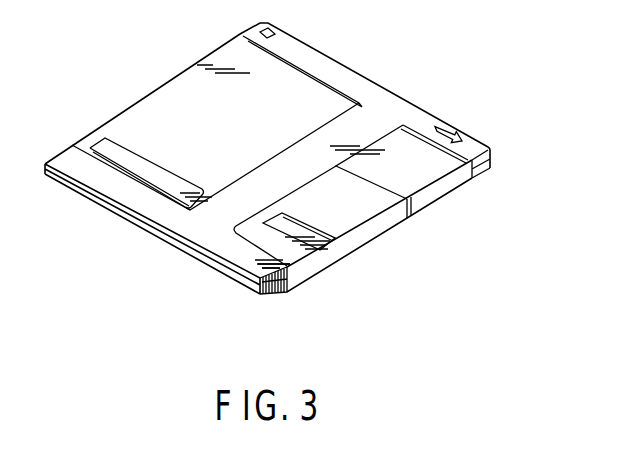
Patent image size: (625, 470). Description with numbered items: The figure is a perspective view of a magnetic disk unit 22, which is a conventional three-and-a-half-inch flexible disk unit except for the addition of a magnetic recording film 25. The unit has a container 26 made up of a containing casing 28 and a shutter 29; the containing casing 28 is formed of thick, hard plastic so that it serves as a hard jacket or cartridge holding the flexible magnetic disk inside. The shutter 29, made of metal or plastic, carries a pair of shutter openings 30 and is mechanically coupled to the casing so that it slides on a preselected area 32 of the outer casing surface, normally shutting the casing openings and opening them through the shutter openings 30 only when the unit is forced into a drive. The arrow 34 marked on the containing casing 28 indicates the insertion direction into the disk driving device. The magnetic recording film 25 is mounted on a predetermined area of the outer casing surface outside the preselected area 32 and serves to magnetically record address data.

The magnetic disk unit 22 is at (392, 86).
The magnetic recording film 25 is at (162, 184).
The container 26 is at (393, 327).
The containing casing 28 is at (270, 276).
The shutter 29 is at (310, 254).
The shutter openings 30 is at (271, 222).
The preselected area 32 is at (430, 174).
The arrow 34 is at (455, 125).